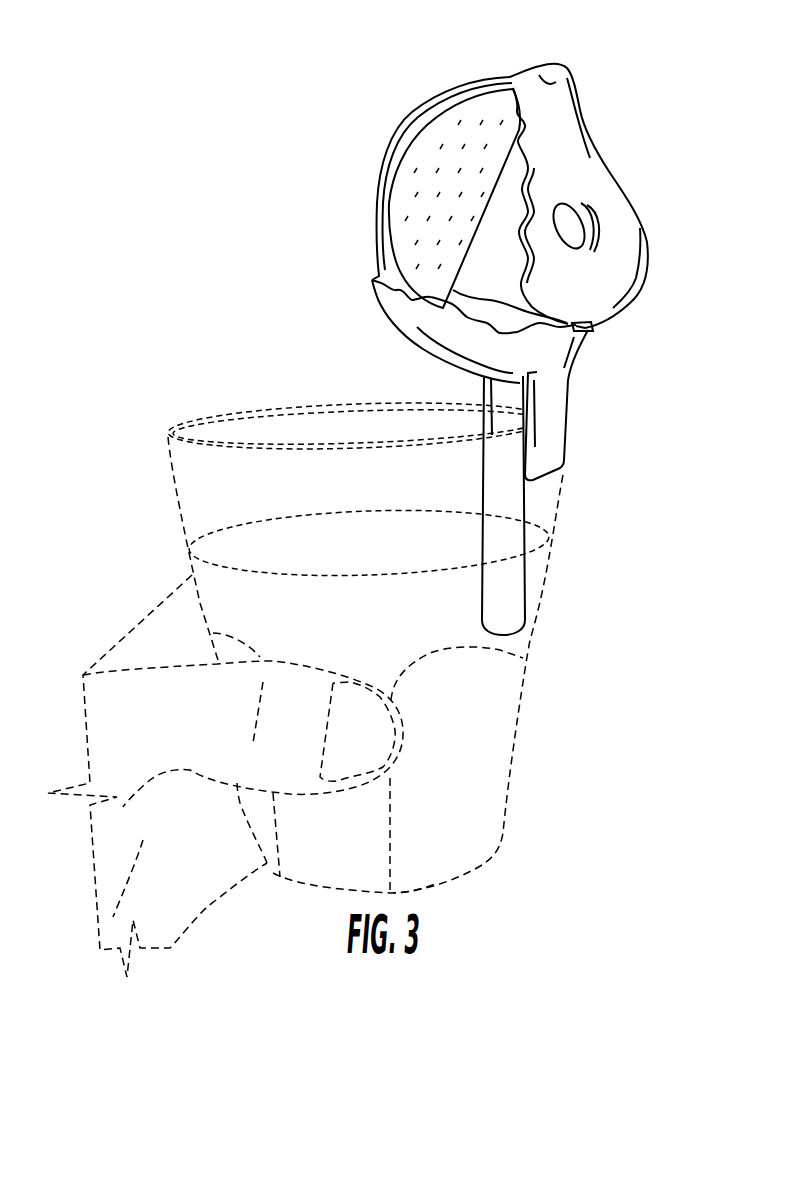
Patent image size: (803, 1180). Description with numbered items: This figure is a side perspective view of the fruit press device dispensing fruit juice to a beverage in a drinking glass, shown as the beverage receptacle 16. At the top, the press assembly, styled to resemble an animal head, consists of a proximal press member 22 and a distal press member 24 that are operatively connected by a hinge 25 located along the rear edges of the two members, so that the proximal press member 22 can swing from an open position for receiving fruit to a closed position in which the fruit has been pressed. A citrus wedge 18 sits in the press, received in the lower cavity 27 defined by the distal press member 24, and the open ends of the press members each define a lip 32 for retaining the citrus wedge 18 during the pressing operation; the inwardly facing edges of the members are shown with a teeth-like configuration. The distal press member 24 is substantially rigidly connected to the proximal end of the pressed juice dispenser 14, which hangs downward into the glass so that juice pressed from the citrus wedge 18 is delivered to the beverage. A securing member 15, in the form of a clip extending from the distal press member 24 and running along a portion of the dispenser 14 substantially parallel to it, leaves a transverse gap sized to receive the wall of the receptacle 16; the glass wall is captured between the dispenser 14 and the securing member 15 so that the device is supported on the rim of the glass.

The pressed juice dispenser 14 is at (513, 500).
The securing member 15 is at (550, 420).
The beverage receptacle 16 is at (480, 768).
The citrus wedge 18 is at (463, 117).
The proximal press member 22 is at (592, 162).
The distal press member 24 is at (550, 355).
The hinge 25 is at (593, 325).
The lower cavity 27 is at (495, 298).
The lip 32 is at (510, 77).